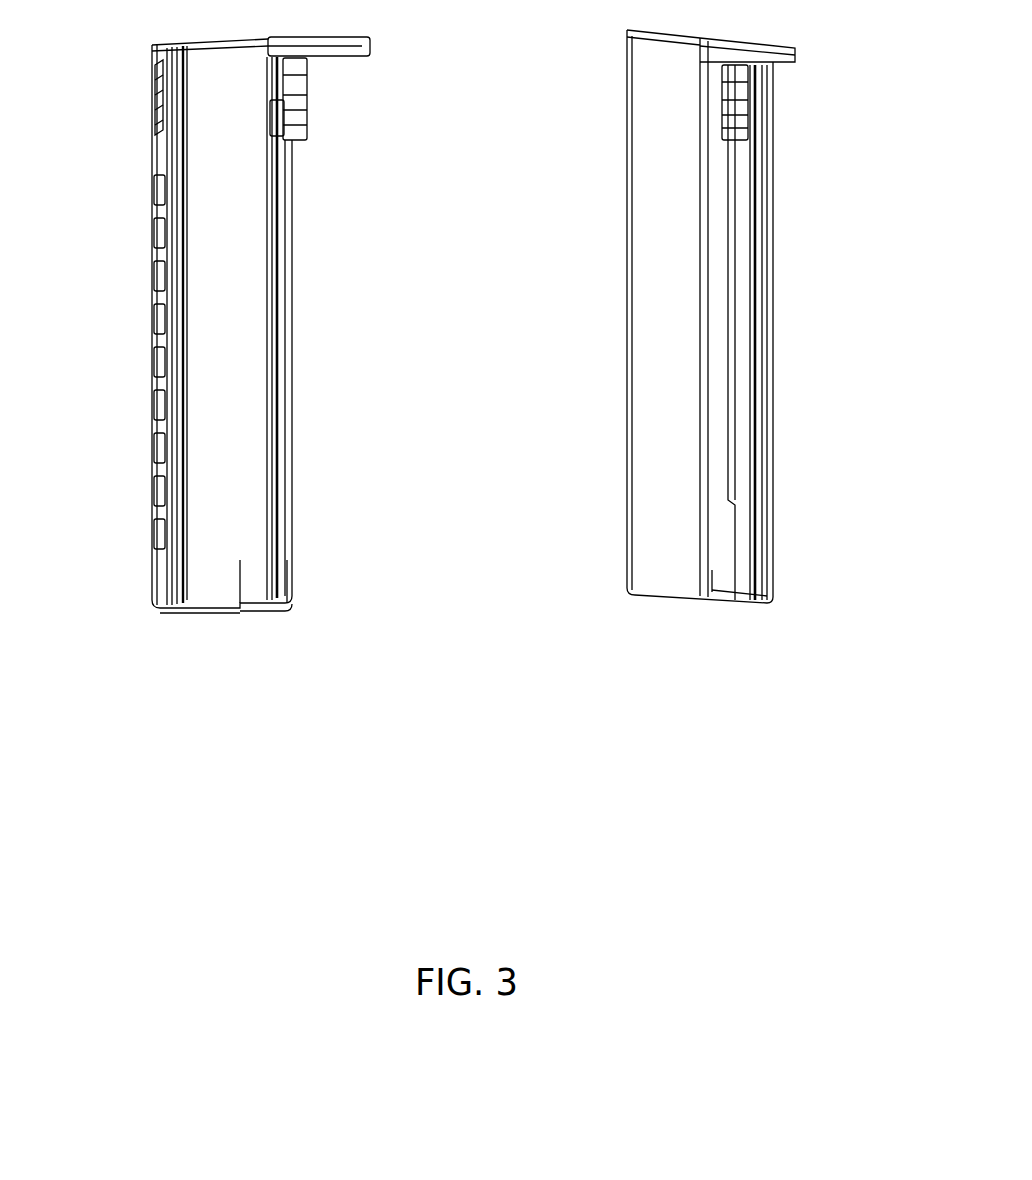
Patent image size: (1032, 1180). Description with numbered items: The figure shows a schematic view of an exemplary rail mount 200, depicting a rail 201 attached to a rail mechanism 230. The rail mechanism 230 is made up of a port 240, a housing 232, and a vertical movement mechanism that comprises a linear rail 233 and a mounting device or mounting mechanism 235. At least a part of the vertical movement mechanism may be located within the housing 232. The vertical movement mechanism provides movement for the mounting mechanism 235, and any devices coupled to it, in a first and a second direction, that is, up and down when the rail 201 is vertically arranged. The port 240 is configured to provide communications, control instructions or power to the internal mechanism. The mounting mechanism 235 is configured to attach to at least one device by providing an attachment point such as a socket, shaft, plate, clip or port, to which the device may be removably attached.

The mounting assembly 200 is at (622, 636).
The rail 201 is at (153, 553).
The rail mechanism 230 is at (240, 608).
The housing 232 is at (248, 555).
The linear rail 233 is at (288, 240).
The mounting mechanism 235 is at (320, 63).
The port 240 is at (158, 118).